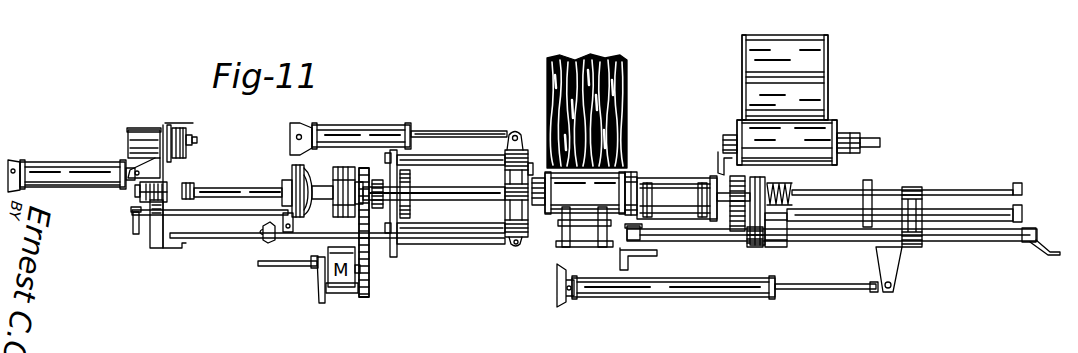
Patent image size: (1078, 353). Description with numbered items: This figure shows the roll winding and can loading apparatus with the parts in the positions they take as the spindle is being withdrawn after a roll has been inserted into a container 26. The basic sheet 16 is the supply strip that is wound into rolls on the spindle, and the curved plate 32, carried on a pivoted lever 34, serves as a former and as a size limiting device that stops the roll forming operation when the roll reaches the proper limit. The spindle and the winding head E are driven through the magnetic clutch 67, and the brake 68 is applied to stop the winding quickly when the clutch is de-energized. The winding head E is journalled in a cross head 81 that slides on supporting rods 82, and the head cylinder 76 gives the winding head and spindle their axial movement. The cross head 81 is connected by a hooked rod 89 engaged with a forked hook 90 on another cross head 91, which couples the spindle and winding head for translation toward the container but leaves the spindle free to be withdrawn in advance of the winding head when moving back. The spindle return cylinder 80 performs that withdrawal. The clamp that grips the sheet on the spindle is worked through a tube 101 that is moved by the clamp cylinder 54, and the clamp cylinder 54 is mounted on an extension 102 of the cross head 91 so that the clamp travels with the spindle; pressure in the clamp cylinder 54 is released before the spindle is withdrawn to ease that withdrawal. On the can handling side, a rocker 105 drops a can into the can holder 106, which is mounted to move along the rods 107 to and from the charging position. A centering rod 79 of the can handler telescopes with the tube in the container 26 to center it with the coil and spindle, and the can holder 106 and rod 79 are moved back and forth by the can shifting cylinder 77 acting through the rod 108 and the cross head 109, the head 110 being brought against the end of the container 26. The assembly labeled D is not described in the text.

The basic sheet 16 is at (622, 79).
The container 26 is at (637, 173).
The curved plate 32 is at (519, 239).
The lever 34 is at (562, 249).
The clamp cylinder 54 is at (154, 130).
The magnetic clutch 67 is at (343, 168).
The brake 68 is at (301, 170).
The head cylinder 76 is at (352, 127).
The can shifting cylinder 77 is at (648, 299).
The centering rod 79 is at (962, 190).
The spindle return cylinder 80 is at (63, 166).
The cross head 81 is at (524, 147).
The supporting rods 82 is at (445, 163).
The hooked rod 89 is at (437, 247).
The forked hook 90 is at (185, 255).
The cross head 91 is at (165, 224).
The tube 101 is at (223, 191).
The extension 102 is at (162, 175).
The rocker 105 is at (742, 126).
The can holder 106 is at (661, 179).
The rods 107 is at (940, 244).
The rod 108 is at (797, 293).
The cross head 109 is at (893, 280).
The head 110 is at (786, 167).
The winding head E is at (520, 170).
The assembly D is at (848, 122).